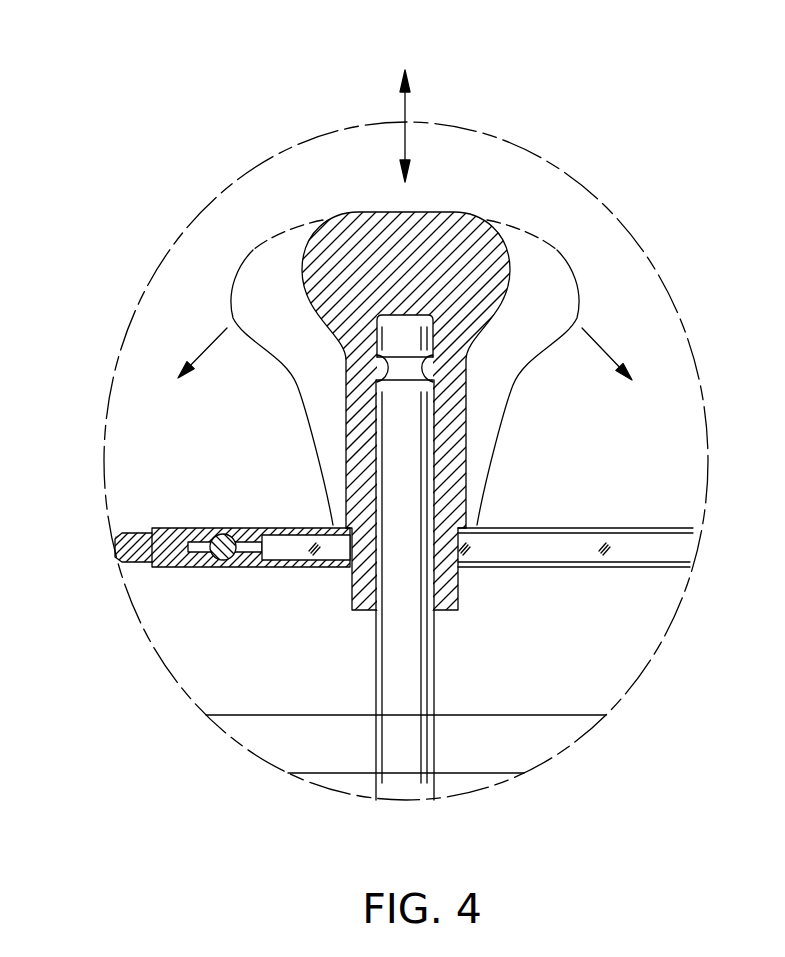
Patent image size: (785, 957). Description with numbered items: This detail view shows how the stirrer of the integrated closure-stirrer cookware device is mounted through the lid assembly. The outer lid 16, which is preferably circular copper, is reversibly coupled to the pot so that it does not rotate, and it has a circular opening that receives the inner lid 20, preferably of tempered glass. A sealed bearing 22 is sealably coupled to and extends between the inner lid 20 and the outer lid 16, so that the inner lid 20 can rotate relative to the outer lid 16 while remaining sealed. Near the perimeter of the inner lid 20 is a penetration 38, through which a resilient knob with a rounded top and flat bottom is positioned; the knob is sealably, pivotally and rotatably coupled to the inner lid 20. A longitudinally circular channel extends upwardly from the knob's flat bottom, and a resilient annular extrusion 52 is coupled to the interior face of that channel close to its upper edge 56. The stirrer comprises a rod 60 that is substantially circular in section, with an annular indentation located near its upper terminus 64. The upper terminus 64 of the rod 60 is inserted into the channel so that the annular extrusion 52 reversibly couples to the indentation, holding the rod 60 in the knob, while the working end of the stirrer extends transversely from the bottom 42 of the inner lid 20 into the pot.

The outer lid 16 is at (122, 520).
The inner lid 20 is at (314, 518).
The sealed bearing 22 is at (216, 518).
The penetration 38 is at (350, 552).
The bottom 42 is at (536, 582).
The annular extrusion 52 is at (436, 370).
The upper edge 56 is at (427, 317).
The rod 60 is at (412, 694).
The upper terminus 64 is at (412, 315).